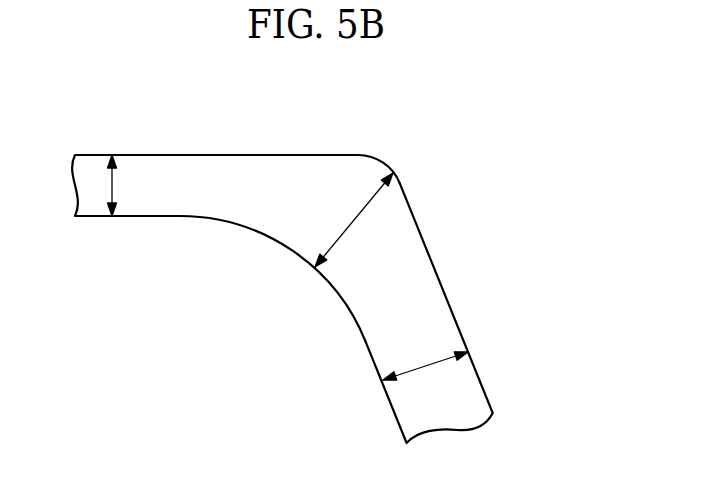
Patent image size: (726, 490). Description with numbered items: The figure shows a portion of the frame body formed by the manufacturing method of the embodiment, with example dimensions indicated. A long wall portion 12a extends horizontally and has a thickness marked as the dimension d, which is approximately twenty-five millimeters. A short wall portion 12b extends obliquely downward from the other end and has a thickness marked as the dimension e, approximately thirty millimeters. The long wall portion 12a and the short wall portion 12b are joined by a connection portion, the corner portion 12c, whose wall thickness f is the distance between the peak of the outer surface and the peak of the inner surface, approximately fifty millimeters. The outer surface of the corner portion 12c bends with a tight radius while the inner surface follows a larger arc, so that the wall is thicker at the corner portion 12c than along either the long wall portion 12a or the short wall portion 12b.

The long wall portion 12a is at (187, 165).
The short wall portion 12b is at (477, 366).
The corner portion 12c is at (372, 176).